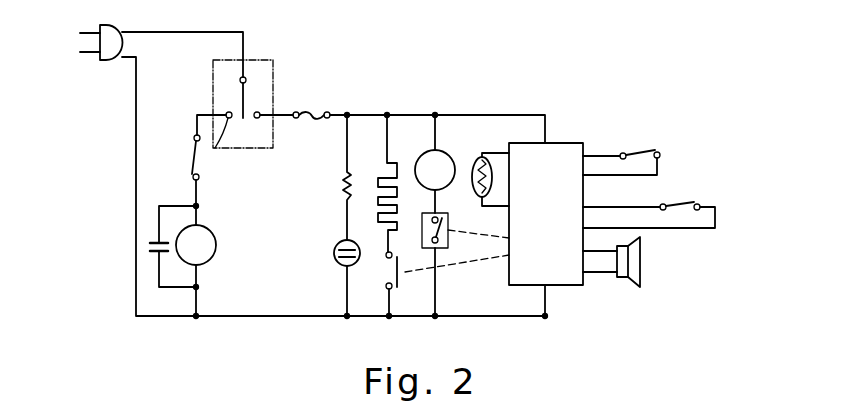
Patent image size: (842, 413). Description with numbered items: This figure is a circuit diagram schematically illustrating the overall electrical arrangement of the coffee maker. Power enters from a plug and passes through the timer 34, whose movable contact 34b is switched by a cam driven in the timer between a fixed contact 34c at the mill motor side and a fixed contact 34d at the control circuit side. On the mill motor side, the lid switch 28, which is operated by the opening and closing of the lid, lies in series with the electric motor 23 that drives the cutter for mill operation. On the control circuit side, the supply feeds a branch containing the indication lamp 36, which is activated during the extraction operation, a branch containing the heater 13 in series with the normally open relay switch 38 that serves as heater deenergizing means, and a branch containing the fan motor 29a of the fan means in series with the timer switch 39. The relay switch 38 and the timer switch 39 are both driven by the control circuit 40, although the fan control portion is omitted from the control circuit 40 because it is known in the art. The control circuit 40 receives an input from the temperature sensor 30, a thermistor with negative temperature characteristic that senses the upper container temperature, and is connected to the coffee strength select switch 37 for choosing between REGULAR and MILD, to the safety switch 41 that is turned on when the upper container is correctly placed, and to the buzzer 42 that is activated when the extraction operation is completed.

The heater 13 is at (375, 185).
The electric motor 23 is at (217, 243).
The lid switch 28 is at (192, 160).
The fan motor 29a is at (451, 154).
The temperature sensor 30 is at (476, 163).
The timer 34 is at (281, 68).
The movable contact 34b is at (246, 96).
The fixed contact 34c is at (222, 143).
The fixed contact 34d is at (259, 118).
The indication lamp 36 is at (336, 257).
The coffee strength select switch 37 is at (638, 150).
The relay switch 38 is at (400, 275).
The timer switch 39 is at (445, 250).
The control circuit 40 is at (572, 143).
The safety switch 41 is at (680, 205).
The buzzer 42 is at (641, 259).